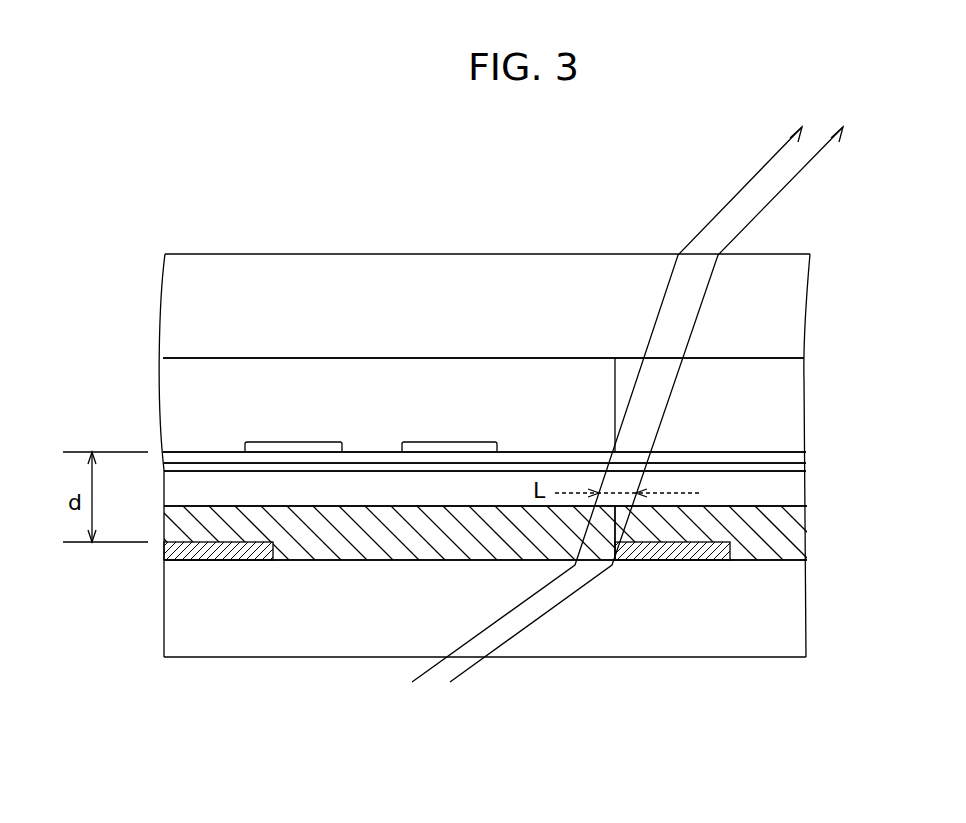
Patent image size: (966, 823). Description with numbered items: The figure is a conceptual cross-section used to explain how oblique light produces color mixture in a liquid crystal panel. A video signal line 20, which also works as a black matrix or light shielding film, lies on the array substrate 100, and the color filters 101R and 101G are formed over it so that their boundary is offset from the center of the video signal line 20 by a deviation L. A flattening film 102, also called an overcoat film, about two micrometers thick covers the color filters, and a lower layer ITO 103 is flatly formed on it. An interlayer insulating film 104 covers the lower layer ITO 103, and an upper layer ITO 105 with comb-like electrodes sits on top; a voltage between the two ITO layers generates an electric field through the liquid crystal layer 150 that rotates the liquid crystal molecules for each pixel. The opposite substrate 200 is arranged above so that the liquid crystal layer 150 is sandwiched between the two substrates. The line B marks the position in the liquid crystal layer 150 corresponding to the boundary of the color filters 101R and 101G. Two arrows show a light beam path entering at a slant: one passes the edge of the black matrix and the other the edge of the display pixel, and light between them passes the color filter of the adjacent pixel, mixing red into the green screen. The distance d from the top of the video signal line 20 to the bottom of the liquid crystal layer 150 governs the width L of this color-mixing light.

The opposite substrate 200 is at (782, 311).
The liquid crystal layer 150 is at (185, 387).
The line B is at (618, 380).
The upper layer ITO 105 is at (298, 452).
The interlayer insulating film 104 is at (800, 455).
The lower layer ITO 103 is at (790, 477).
The flattening film 102 is at (793, 492).
The color filter 101G is at (785, 527).
The color filter 101R is at (357, 560).
The array substrate 100 is at (783, 612).
The video signal line 20 is at (675, 560).